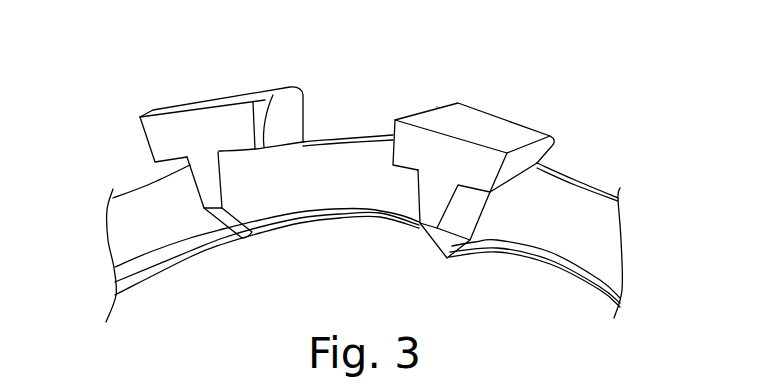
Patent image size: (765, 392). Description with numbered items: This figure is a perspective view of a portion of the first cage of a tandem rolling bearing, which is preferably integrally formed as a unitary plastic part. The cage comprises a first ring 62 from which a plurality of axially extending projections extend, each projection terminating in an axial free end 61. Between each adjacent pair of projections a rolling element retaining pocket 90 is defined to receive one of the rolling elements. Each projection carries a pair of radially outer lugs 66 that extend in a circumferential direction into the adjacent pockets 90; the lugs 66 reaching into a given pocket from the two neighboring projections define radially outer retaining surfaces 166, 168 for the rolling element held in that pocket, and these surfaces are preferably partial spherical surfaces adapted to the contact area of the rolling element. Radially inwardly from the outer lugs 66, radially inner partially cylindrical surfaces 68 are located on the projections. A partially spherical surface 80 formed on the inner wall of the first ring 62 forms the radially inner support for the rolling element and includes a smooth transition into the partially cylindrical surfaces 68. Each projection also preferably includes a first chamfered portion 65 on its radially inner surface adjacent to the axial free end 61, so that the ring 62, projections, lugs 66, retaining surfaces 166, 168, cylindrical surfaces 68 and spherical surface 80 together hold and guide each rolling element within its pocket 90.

The axial free end 61 is at (468, 141).
The first ring 62 is at (575, 187).
The first chamfered portion 65 is at (435, 248).
The radially outer lugs 66 is at (149, 143).
The radially inner partially cylindrical surfaces 68 is at (255, 236).
The partially spherical surface 80 is at (317, 187).
The rolling element retaining pockets 90 is at (353, 127).
The radially outer retaining surface 166 is at (290, 123).
The radially outer retaining surface 168 is at (437, 107).